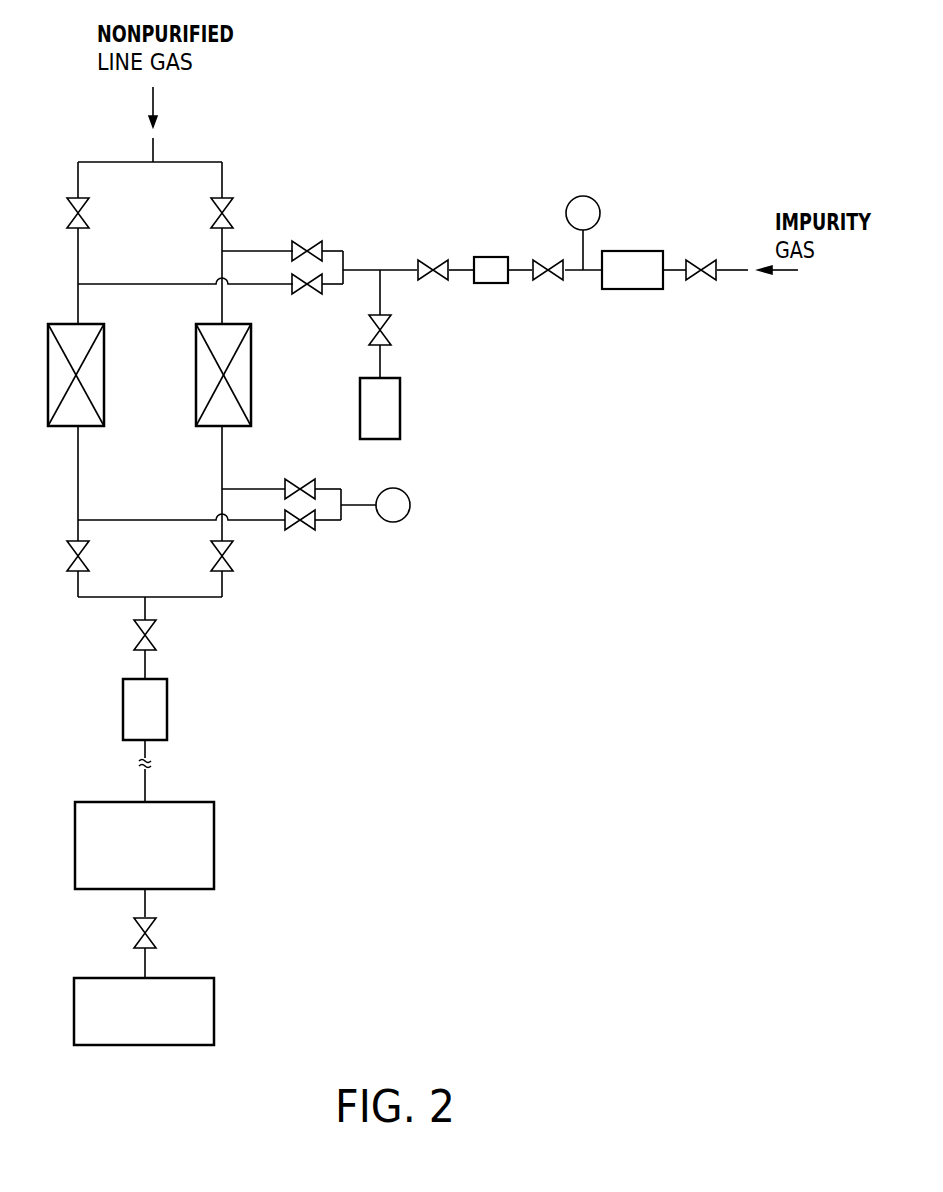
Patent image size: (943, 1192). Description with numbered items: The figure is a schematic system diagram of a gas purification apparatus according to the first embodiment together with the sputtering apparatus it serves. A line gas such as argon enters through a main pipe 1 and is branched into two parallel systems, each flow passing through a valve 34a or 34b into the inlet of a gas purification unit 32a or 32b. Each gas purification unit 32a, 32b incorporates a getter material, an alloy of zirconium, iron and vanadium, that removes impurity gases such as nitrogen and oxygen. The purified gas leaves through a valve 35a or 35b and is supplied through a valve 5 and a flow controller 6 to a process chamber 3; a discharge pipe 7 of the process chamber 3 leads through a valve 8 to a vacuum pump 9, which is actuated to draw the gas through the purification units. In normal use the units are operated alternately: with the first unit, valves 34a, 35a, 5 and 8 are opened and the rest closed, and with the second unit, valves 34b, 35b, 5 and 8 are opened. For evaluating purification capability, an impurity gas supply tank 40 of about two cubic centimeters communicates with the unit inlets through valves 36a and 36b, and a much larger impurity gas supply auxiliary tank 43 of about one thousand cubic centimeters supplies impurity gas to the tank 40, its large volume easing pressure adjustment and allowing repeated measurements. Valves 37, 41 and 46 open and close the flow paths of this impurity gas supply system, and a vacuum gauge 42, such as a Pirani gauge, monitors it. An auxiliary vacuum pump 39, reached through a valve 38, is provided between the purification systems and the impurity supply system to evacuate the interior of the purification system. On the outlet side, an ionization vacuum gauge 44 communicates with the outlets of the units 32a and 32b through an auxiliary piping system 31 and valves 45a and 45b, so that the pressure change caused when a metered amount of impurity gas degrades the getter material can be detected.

The main pipe 1 is at (153, 150).
The process chamber 3 is at (214, 850).
The valve 5 is at (156, 630).
The flow controller 6 is at (168, 700).
The discharge pipe 7 is at (145, 905).
The valve 8 is at (156, 936).
The vacuum pump 9 is at (214, 1013).
The auxiliary piping system 31 is at (332, 584).
The gas purification unit 32a is at (105, 355).
The gas purification unit 32b is at (196, 402).
The valve 34a is at (89, 211).
The valve 34b is at (212, 220).
The valve 35a is at (68, 545).
The valve 35b is at (210, 561).
The valve 36a is at (300, 296).
The valve 36b is at (318, 241).
The valve 37 is at (428, 257).
The valve 38 is at (391, 330).
The auxiliary vacuum pump 39 is at (400, 412).
The impurity gas supply tank 40 is at (491, 257).
The valve 41 is at (545, 257).
The vacuum gauge 42 is at (585, 196).
The impurity gas supply auxiliary tank 43 is at (612, 290).
The ionization vacuum gauge 44 is at (395, 523).
The valve 45a is at (295, 532).
The valve 45b is at (298, 478).
The valve 46 is at (699, 257).